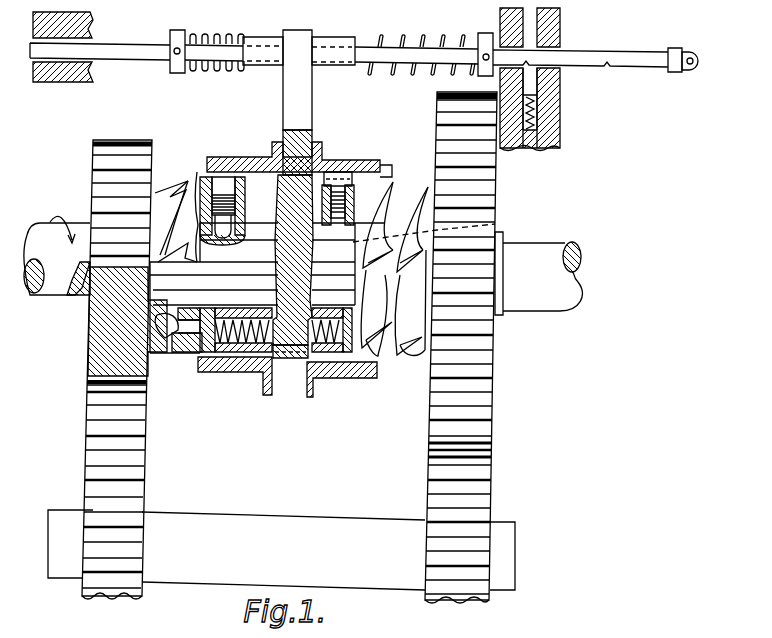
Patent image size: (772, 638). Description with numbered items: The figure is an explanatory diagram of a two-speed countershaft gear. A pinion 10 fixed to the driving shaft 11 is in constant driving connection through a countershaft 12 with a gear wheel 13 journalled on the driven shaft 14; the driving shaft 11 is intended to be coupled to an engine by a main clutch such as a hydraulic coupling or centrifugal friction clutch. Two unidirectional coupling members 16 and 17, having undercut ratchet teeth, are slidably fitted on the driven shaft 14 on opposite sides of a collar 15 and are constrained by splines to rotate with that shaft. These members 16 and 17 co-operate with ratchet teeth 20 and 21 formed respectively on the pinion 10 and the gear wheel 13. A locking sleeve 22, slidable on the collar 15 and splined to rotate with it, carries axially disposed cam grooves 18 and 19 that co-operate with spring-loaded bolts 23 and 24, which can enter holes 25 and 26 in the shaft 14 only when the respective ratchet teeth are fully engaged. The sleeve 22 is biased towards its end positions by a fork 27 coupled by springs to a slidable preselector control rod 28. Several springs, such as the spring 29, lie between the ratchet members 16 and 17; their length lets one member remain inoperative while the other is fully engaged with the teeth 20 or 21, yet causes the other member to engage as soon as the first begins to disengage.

The pinion 10 is at (95, 160).
The driving shaft 11 is at (50, 243).
The countershaft 12 is at (295, 512).
The gear wheel 13 is at (500, 180).
The driven shaft 14 is at (578, 252).
The collar 15 is at (305, 256).
The unidirectional coupling member 16 is at (185, 355).
The unidirectional coupling member 17 is at (378, 358).
The cam groove 18 is at (237, 165).
The cam groove 19 is at (378, 175).
The ratchet teeth 20 is at (160, 195).
The ratchet teeth 21 is at (495, 238).
The locking sleeve 22 is at (355, 375).
The spring-loaded bolt 23 is at (212, 183).
The spring-loaded bolt 24 is at (340, 180).
The hole 25 is at (222, 243).
The hole 26 is at (495, 224).
The fork 27 is at (300, 107).
The preselector control rod 28 is at (381, 55).
The spring 29 is at (252, 345).